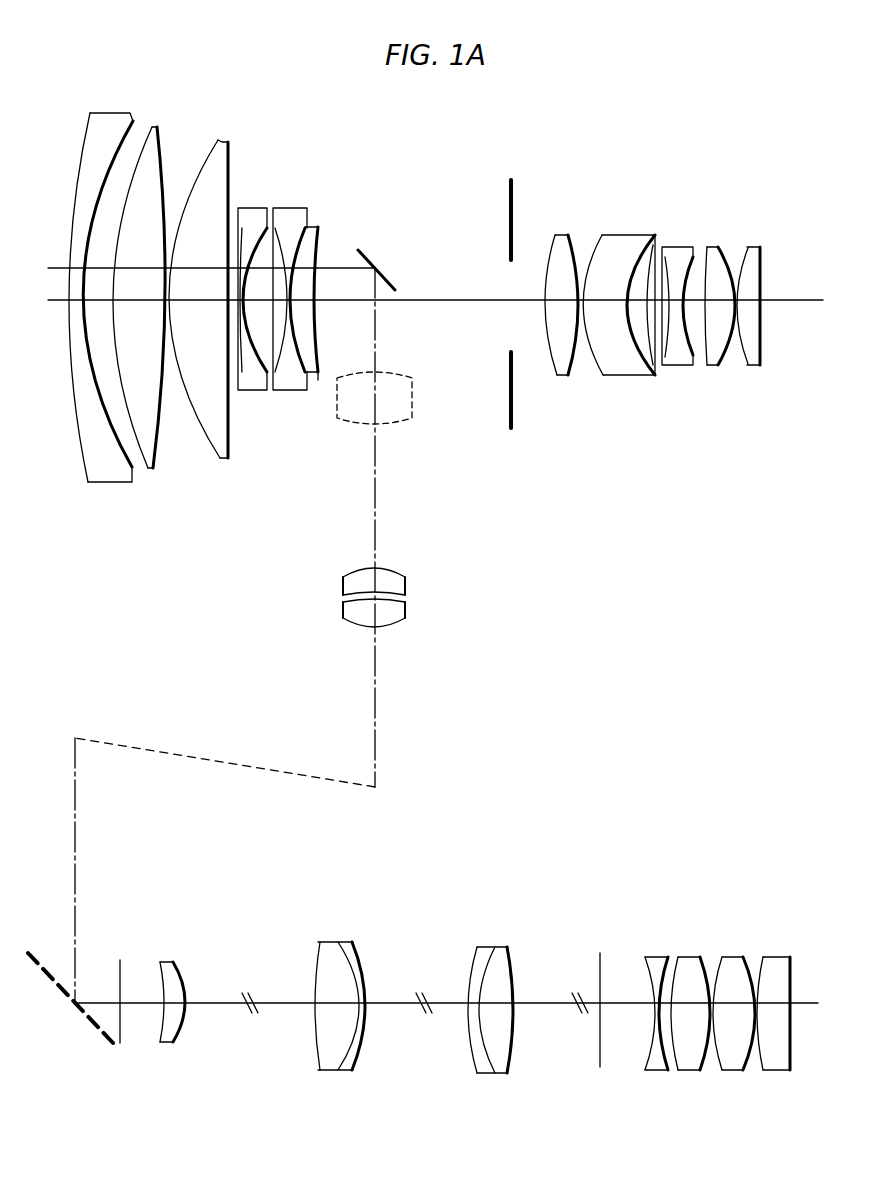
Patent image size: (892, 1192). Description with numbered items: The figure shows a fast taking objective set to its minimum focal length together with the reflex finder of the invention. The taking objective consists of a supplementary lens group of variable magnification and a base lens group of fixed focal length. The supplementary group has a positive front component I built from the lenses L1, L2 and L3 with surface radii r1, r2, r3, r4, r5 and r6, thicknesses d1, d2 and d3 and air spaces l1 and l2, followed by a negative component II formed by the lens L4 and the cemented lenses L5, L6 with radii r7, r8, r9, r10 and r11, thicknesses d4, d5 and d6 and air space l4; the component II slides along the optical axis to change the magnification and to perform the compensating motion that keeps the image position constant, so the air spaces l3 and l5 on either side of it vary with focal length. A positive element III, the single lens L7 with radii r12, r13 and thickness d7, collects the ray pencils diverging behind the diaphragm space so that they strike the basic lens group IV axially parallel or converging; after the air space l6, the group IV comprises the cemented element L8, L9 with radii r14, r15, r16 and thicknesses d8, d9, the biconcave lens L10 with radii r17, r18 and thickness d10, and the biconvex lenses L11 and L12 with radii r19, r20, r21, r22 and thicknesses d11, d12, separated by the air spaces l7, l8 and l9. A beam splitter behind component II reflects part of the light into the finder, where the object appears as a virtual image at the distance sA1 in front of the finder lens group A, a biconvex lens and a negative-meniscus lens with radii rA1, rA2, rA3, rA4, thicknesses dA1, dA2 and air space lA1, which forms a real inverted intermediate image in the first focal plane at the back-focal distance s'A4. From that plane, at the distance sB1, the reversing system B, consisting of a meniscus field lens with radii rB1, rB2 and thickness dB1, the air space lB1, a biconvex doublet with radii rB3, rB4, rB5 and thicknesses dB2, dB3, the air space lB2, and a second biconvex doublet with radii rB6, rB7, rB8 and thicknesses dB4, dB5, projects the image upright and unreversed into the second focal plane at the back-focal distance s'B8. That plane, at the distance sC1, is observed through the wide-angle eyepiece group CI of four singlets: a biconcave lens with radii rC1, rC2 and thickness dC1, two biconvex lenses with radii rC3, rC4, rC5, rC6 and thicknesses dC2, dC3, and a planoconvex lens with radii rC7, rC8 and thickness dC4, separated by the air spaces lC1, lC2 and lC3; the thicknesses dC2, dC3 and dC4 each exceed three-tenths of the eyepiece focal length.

The positive front component I is at (83, 44).
The negative component II is at (327, 126).
The positive element III is at (580, 158).
The basic lens group IV is at (780, 158).
The finder lens group A is at (487, 560).
The reversing system B is at (133, 886).
The wide-angle lens group CI is at (623, 890).
The lens L1 is at (101, 295).
The lens L2 is at (145, 295).
The lens L3 is at (200, 295).
The lens L4 is at (255, 297).
The lens L5 is at (296, 297).
The lens L6 is at (323, 297).
The single lens L7 is at (555, 299).
The lens L8 is at (617, 299).
The lens L9 is at (645, 299).
The biconcave lens L10 is at (684, 299).
The biconvex lens L11 is at (726, 299).
The biconvex lens L12 is at (766, 299).
The radius r1 is at (88, 117).
The radius r2 is at (130, 118).
The radius r3 is at (151, 128).
The radius r4 is at (158, 129).
The radius r5 is at (216, 141).
The radius r6 is at (228, 143).
The radius r7 is at (240, 235).
The radius r8 is at (267, 232).
The radius r9 is at (276, 230).
The radius r10 is at (305, 232).
The radius r11 is at (318, 228).
The radius r12 is at (548, 258).
The radius r13 is at (569, 258).
The radius r14 is at (594, 258).
The radius r15 is at (622, 258).
The radius r16 is at (652, 257).
The radius r17 is at (666, 260).
The radius r18 is at (692, 257).
The radius r19 is at (708, 257).
The radius r20 is at (720, 257).
The radius r21 is at (750, 257).
The radius r22 is at (762, 251).
The lens thickness d1 is at (101, 309).
The lens thickness d2 is at (145, 309).
The lens thickness d3 is at (200, 323).
The lens thickness d4 is at (255, 316).
The lens thickness d5 is at (296, 316).
The lens thickness d6 is at (323, 316).
The lens thickness d7 is at (555, 313).
The lens thickness d8 is at (617, 313).
The lens thickness d9 is at (645, 313).
The lens thickness d10 is at (684, 313).
The lens thickness d11 is at (726, 313).
The lens thickness d12 is at (766, 313).
The air space l1 is at (102, 305).
The air space l2 is at (167, 305).
The air space l3 is at (235, 305).
The air space l4 is at (270, 305).
The air space l5 is at (464, 305).
The air space l6 is at (580, 305).
The air space l7 is at (658, 305).
The air space l8 is at (700, 305).
The air space l9 is at (736, 305).
The back-focal length sA1 is at (378, 513).
The radius rA1 is at (358, 568).
The radius rA2 is at (343, 578).
The radius rA3 is at (343, 612).
The radius rA4 is at (357, 624).
The lens thickness dA1 is at (376, 572).
The lens thickness dA2 is at (376, 630).
The air space lA1 is at (378, 602).
The back-focal length s'A4 is at (429, 703).
The back-focal length sB1 is at (131, 1008).
The radius rB1 is at (160, 970).
The radius rB2 is at (177, 970).
The radius rB3 is at (318, 968).
The radius rB4 is at (340, 966).
The radius rB5 is at (362, 968).
The radius rB6 is at (473, 968).
The radius rB7 is at (494, 963).
The radius rB8 is at (508, 968).
The lens thickness dB1 is at (174, 1011).
The lens thickness dB2 is at (330, 1015).
The lens thickness dB3 is at (372, 1015).
The lens thickness dB4 is at (485, 1017).
The lens thickness dB5 is at (521, 1017).
The air space lB1 is at (251, 1015).
The air space lB2 is at (418, 1015).
The back-focal length s'B8 is at (558, 1077).
The back-focal length sC1 is at (615, 1008).
The radius rC1 is at (645, 970).
The radius rC2 is at (667, 968).
The radius rC3 is at (677, 968).
The radius rC4 is at (702, 968).
The radius rC5 is at (723, 968).
The radius rC6 is at (748, 968).
The radius rC7 is at (767, 968).
The radius rC8 is at (790, 968).
The lens thickness dC1 is at (652, 1018).
The lens thickness dC2 is at (698, 1018).
The lens thickness dC3 is at (741, 1018).
The lens thickness dC4 is at (788, 1018).
The air space lC1 is at (668, 1017).
The air space lC2 is at (710, 1015).
The air space lC3 is at (757, 1015).